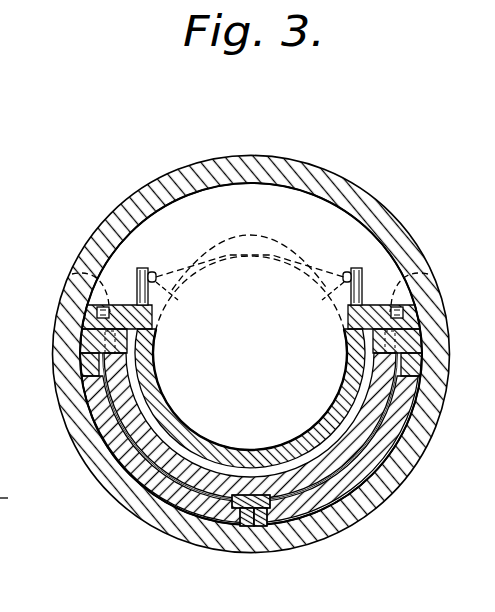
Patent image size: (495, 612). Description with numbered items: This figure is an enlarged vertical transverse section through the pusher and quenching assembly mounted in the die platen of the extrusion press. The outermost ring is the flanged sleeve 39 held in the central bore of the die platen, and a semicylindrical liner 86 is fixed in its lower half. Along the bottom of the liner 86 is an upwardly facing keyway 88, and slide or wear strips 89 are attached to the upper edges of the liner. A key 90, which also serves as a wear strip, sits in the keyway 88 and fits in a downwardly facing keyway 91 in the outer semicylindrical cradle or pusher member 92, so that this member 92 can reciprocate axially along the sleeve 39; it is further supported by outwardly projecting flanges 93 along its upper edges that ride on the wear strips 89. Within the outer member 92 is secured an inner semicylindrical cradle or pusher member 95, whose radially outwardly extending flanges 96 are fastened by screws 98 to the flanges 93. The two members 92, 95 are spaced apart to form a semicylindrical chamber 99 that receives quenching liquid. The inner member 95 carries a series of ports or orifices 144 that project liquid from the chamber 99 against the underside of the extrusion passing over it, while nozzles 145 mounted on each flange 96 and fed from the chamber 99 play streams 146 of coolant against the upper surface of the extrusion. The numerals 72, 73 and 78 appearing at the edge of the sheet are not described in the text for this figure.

The flanged sleeve 39 is at (232, 158).
The semicylindrical liner 86 is at (337, 490).
The keyway 88 is at (223, 507).
The slide or wear strips 89 is at (80, 364).
The key 90 is at (242, 510).
The keyway 91 is at (263, 513).
The outer semicylindrical cradle or pusher member 92 is at (172, 473).
The outwardly projecting flanges 93 is at (90, 347).
The inner semicylindrical cradle or pusher member 95 is at (238, 443).
The radially outwardly extending flanges 96 is at (88, 316).
The screws 98 is at (92, 304).
The semicylindrical chamber 99 is at (304, 462).
The ports or orifices 144 is at (190, 433).
The nozzles 145 is at (144, 268).
The streams of coolant 146 is at (252, 225).
The element 72 is at (0, 96).
The element 73 is at (0, 124).
The element 78 is at (12, 140).